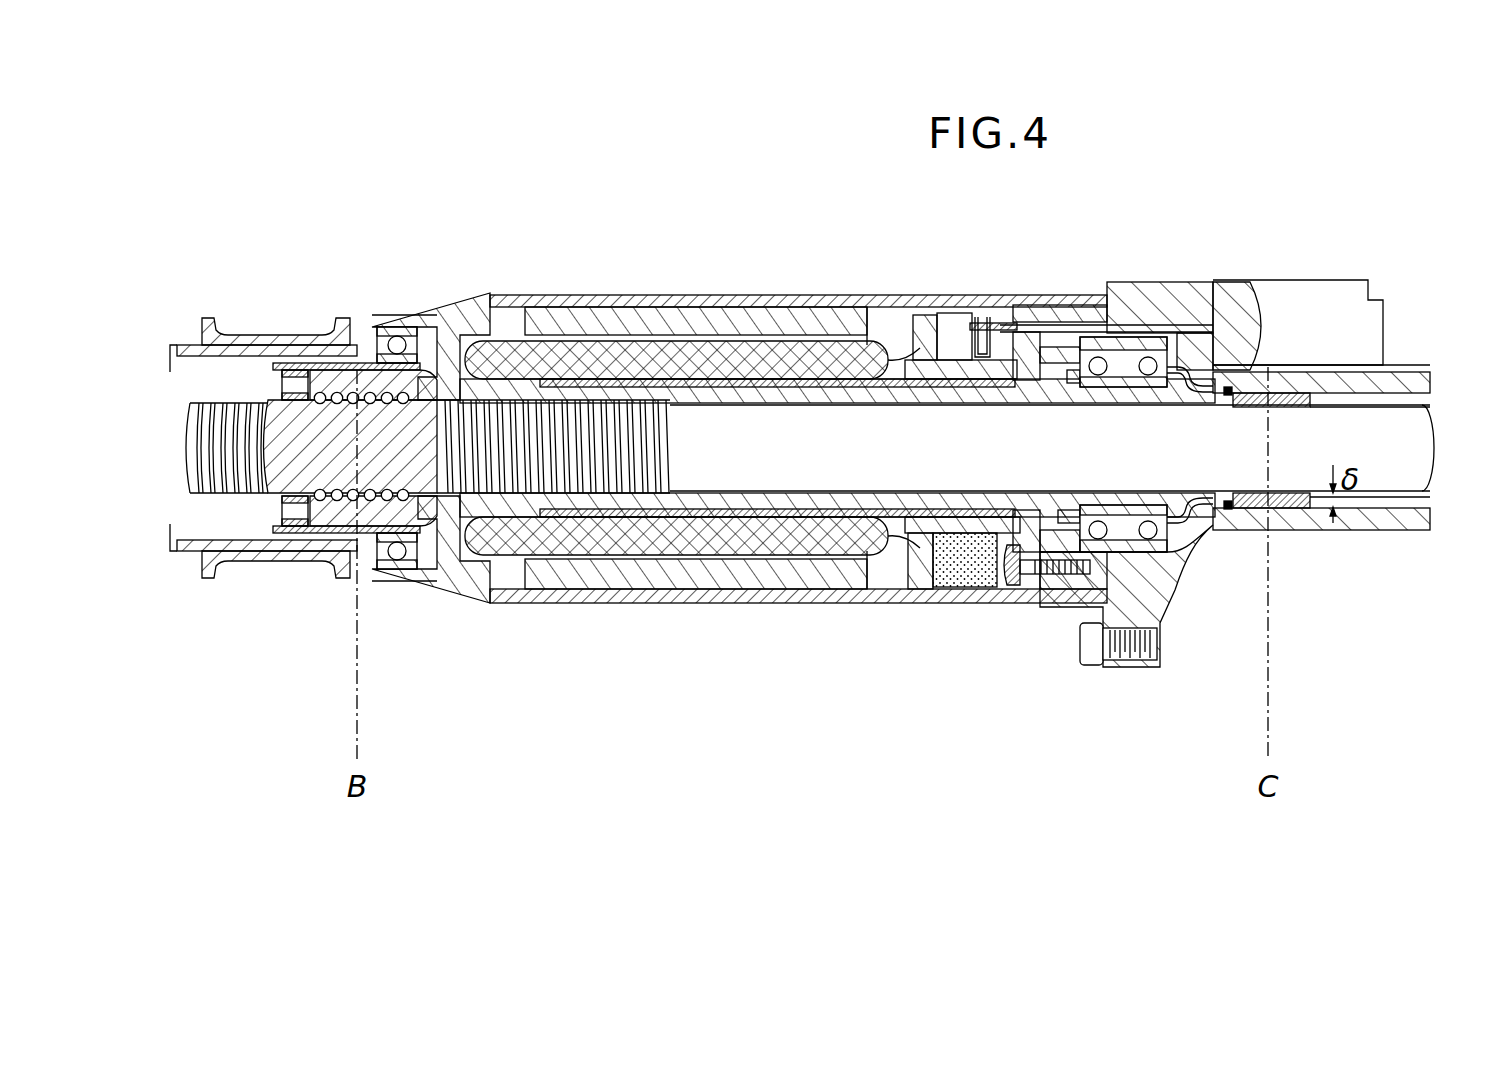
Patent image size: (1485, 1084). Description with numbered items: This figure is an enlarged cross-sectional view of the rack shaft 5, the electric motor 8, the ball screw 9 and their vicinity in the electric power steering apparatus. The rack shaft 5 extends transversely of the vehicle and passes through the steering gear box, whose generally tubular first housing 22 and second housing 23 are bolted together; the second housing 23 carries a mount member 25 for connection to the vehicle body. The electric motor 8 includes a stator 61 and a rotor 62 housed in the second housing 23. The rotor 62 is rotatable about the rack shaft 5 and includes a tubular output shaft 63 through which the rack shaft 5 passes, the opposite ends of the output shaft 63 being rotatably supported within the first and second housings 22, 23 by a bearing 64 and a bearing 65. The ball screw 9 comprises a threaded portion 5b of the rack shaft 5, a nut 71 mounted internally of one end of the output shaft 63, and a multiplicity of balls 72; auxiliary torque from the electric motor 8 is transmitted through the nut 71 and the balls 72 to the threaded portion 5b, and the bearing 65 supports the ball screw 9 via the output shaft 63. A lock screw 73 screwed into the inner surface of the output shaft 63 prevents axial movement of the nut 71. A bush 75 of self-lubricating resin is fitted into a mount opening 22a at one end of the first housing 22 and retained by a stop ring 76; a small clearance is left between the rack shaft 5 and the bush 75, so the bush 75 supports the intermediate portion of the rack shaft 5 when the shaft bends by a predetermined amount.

The rack shaft 5 is at (905, 452).
The threaded portion 5b is at (240, 495).
The electric motor 8 is at (837, 342).
The ball screw 9 is at (298, 567).
The first housing 22 is at (1407, 517).
The mount opening 22a is at (1305, 418).
The second housing 23 is at (688, 603).
The mount member 25 is at (258, 330).
The stator 61 is at (630, 313).
The rotor 62 is at (703, 335).
The output shaft 63 is at (752, 388).
The bearing 64 is at (1120, 315).
The bearing 65 is at (403, 327).
The nut 71 is at (320, 512).
The balls 72 is at (343, 502).
The lock screw 73 is at (290, 530).
The bush 75 is at (1302, 513).
The stop ring 76 is at (1228, 518).